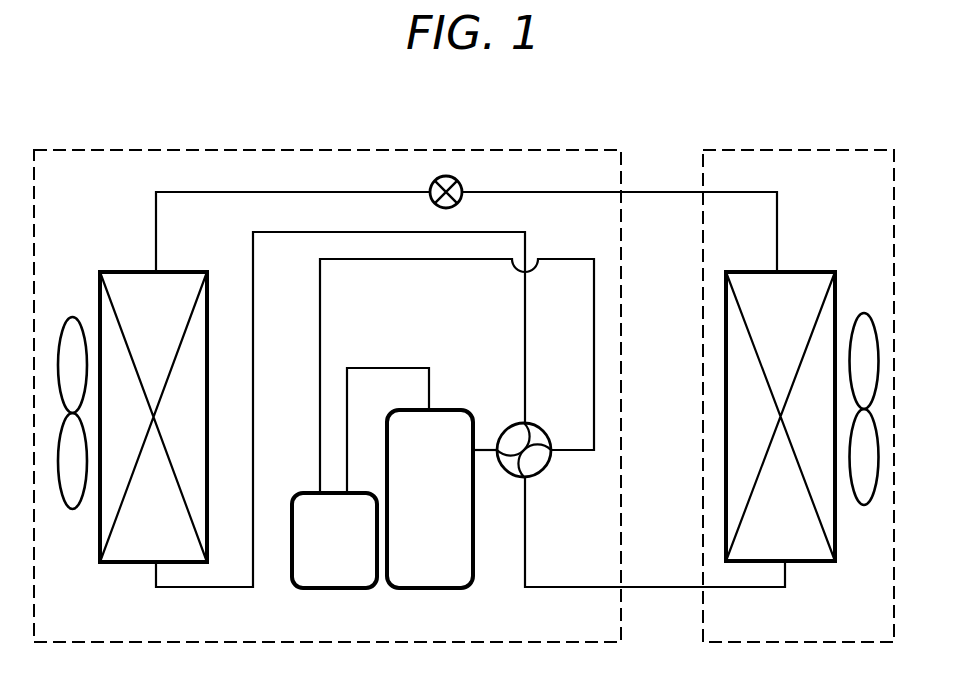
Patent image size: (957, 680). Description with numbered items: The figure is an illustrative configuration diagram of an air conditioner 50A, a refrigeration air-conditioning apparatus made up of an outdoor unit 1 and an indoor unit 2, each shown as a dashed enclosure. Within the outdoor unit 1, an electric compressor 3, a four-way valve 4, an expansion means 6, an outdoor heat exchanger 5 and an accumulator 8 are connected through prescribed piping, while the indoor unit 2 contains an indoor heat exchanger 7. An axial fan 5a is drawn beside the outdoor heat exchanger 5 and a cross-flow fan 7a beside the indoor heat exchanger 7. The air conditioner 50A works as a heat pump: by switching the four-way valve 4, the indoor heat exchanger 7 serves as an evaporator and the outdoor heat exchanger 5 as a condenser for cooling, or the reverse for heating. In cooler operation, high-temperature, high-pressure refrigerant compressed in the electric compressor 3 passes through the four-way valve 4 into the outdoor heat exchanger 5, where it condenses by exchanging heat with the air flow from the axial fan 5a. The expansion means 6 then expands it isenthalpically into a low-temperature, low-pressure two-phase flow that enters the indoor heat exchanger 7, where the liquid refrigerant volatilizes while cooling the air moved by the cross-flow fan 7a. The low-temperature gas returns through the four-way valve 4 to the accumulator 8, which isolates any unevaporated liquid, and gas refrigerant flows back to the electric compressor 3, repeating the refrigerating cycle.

The air conditioner 50A is at (592, 107).
The outdoor unit 1 is at (344, 151).
The indoor unit 2 is at (800, 151).
The electric compressor 3 is at (449, 422).
The four-way valve 4 is at (544, 433).
The outdoor heat exchanger 5 is at (128, 272).
The axial fan 5a is at (72, 318).
The expansion means 6 is at (433, 184).
The indoor heat exchanger 7 is at (810, 272).
The cross-flow fan 7a is at (864, 318).
The accumulator 8 is at (308, 507).